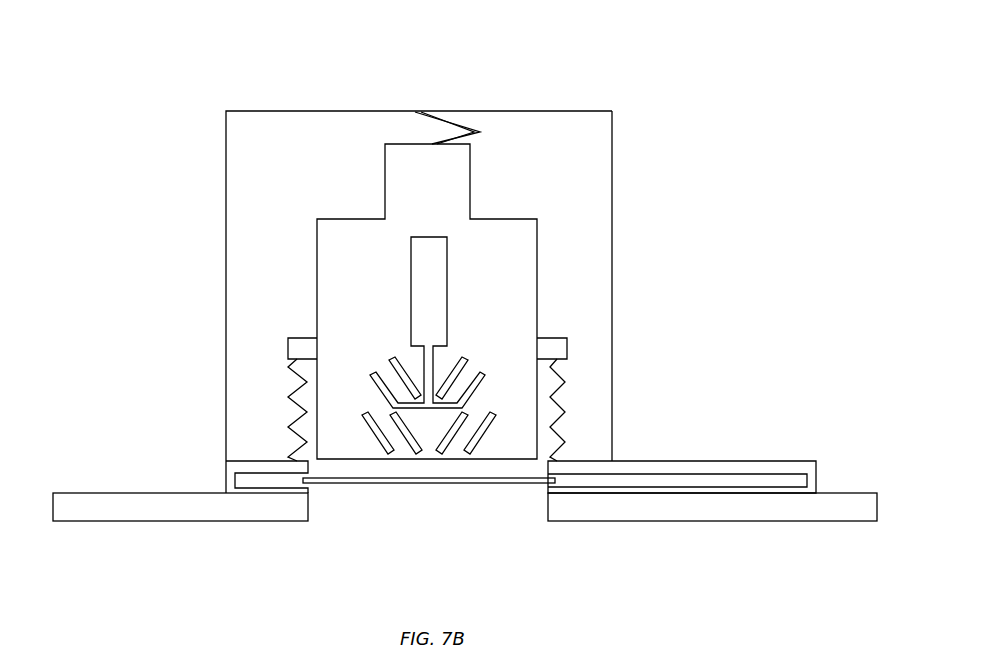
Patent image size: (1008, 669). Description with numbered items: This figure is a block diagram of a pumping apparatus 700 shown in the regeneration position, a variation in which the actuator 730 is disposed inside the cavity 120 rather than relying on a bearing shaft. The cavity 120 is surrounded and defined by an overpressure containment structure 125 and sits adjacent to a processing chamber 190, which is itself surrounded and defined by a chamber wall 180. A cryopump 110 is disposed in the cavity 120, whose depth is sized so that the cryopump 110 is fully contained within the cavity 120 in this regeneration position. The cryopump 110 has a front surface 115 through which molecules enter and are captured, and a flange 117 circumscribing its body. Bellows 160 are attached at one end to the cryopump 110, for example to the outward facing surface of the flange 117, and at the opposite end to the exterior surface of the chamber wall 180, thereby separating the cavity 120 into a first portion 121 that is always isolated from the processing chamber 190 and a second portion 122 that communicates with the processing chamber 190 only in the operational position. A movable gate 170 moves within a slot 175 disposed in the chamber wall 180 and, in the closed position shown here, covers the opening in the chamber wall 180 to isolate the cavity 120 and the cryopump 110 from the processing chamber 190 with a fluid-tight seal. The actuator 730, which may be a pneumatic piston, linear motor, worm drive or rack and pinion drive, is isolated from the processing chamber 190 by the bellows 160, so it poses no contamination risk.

The pumping apparatus 700 is at (188, 147).
The actuator 730 is at (421, 132).
The cavity 120 is at (562, 153).
The overpressure containment structure 125 is at (615, 181).
The first portion 121 is at (583, 262).
The cryopump 110 is at (312, 297).
The flange 117 is at (287, 347).
The bellows 160 is at (285, 442).
The second portion 122 is at (552, 430).
The slot 175 is at (650, 466).
The chamber wall 180 is at (268, 523).
The front surface 115 is at (400, 460).
The movable gate 170 is at (465, 484).
The processing chamber 190 is at (497, 591).